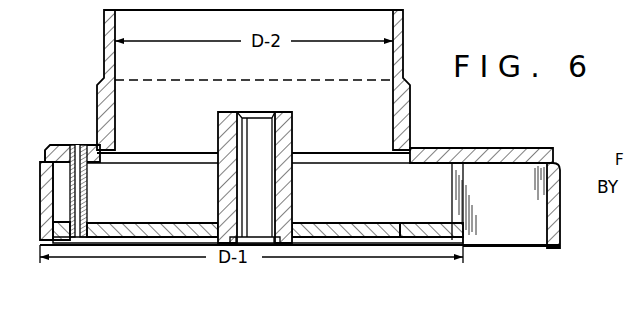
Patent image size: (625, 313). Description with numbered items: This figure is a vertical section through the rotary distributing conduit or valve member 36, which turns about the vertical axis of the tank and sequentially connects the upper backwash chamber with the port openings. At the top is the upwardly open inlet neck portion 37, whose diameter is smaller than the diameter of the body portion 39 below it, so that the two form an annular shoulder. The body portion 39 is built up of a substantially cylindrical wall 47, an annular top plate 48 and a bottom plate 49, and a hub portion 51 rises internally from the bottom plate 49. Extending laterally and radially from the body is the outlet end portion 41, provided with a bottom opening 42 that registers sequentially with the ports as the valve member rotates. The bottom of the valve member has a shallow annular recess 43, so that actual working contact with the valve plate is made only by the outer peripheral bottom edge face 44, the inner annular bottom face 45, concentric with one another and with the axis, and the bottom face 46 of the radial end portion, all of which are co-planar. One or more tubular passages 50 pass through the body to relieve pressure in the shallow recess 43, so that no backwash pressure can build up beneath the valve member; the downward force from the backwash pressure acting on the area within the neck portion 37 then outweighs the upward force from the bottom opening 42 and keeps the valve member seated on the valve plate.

The rotary distributing conduit or valve member 36 is at (83, 127).
The inlet neck portion 37 is at (110, 108).
The body portion 39 is at (28, 161).
The outlet end portion 41 is at (562, 165).
The bottom opening 42 is at (488, 232).
The shallow annular recess 43 is at (407, 243).
The outer peripheral bottom edge face 44 is at (43, 246).
The inner annular bottom face 45 is at (225, 238).
The bottom face of the radial end portion 46 is at (537, 250).
The substantially cylindrical wall 47 is at (45, 208).
The annular top plate 48 is at (435, 161).
The bottom plate 49 is at (349, 223).
The tubular passages 50 is at (88, 181).
The hub portion 51 is at (285, 128).